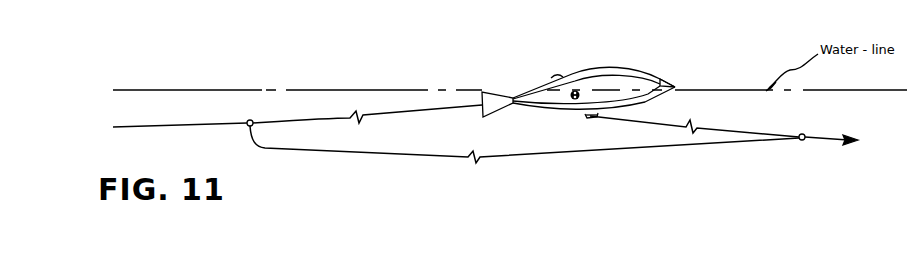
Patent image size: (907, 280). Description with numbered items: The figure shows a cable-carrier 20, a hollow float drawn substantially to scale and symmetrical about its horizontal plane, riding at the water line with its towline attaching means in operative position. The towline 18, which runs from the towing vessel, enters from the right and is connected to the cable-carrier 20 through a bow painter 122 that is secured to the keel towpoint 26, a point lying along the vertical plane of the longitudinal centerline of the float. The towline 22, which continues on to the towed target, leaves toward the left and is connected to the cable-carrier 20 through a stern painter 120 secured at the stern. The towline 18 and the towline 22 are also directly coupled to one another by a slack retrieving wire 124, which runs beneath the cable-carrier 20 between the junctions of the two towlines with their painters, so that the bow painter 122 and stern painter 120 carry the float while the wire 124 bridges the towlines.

The towline 18 is at (834, 134).
The cable-carrier 20 is at (662, 73).
The towline 22 is at (180, 122).
The towpoint 26 is at (589, 118).
The stern painter 120 is at (367, 109).
The bow painter 122 is at (694, 126).
The slack retrieving wire 124 is at (573, 158).